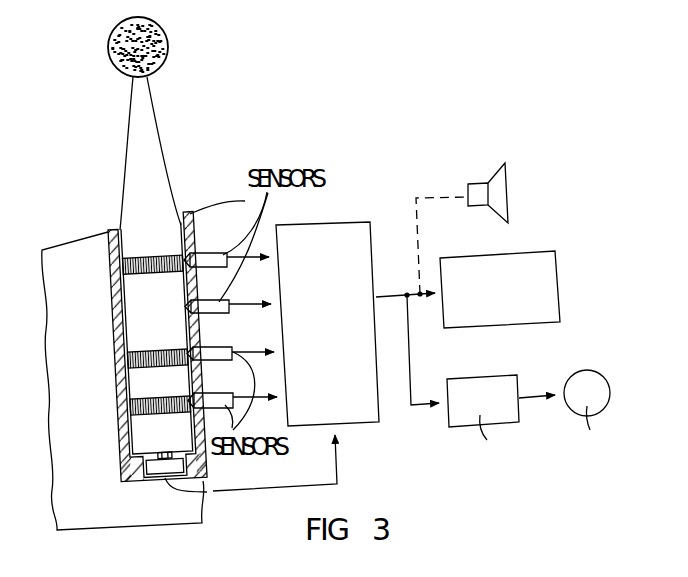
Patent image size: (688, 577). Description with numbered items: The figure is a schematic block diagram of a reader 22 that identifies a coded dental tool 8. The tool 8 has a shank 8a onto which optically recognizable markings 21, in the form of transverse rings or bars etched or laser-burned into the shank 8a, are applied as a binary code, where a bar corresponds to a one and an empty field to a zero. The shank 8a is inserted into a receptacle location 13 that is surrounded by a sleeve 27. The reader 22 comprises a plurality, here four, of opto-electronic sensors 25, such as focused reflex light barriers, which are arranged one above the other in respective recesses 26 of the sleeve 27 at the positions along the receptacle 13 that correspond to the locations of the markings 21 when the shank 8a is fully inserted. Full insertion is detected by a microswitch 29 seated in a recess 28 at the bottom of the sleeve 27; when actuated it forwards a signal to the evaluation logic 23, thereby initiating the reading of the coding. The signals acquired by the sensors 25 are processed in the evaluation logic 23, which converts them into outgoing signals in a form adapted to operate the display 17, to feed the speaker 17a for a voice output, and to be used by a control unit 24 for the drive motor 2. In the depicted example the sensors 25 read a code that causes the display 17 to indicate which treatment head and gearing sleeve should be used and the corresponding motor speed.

The tool 8 is at (143, 152).
The shank 8a is at (124, 313).
The receptacle location 13 is at (117, 228).
The markings 21 is at (128, 267).
The reader 22 is at (204, 243).
The evaluation logic 23 is at (305, 223).
The control unit 24 is at (497, 386).
The opto-electronic sensors 25 is at (215, 402).
The recesses 26 is at (196, 332).
The sleeve 27 is at (123, 430).
The recess 28 is at (204, 464).
The microswitch 29 is at (157, 473).
The display 17 is at (532, 256).
The speaker 17a is at (478, 185).
The drive motor 2 is at (588, 372).